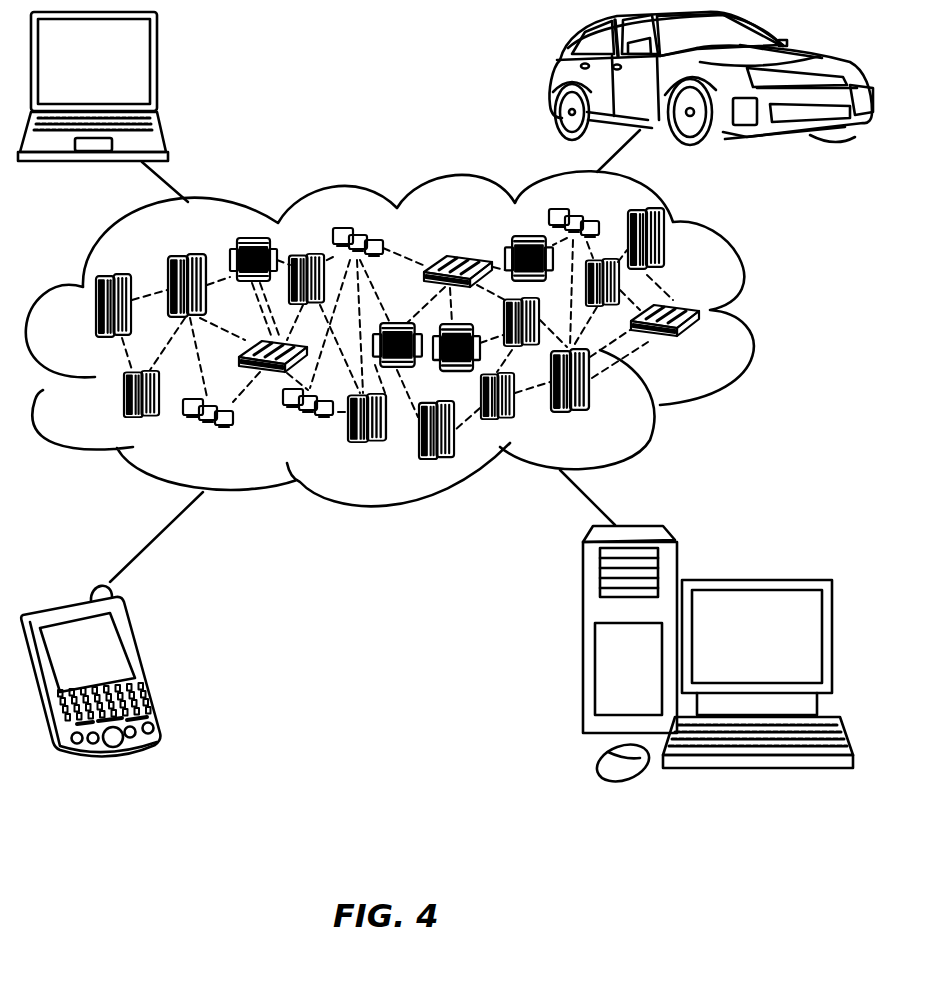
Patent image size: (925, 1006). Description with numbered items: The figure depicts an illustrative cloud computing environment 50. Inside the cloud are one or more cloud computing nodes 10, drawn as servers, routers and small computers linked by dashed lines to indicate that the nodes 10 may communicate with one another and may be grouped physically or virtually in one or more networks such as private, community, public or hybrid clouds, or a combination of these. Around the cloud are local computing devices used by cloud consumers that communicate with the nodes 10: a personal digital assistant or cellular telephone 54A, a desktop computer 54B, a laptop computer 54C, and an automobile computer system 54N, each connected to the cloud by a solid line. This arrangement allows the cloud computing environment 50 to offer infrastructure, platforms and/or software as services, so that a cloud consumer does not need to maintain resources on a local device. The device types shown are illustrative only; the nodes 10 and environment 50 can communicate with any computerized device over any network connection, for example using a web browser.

The cloud computing node 10 is at (706, 343).
The cloud computing environment 50 is at (753, 318).
The personal digital assistant or cellular telephone 54A is at (148, 663).
The desktop computer 54B is at (752, 580).
The laptop computer 54C is at (157, 64).
The automobile computer system 54N is at (560, 80).